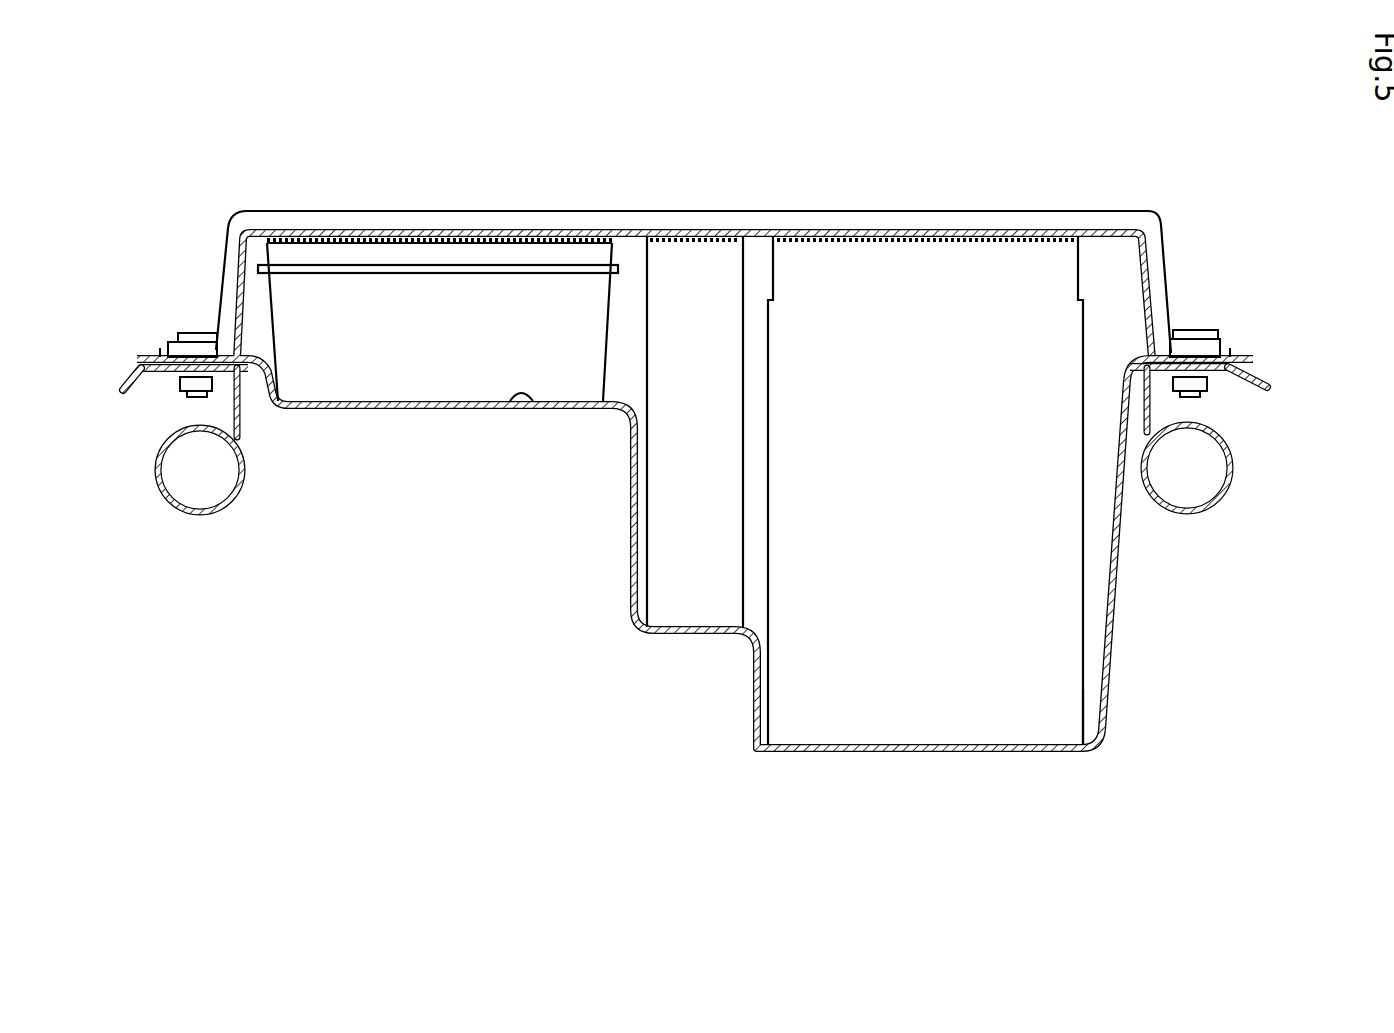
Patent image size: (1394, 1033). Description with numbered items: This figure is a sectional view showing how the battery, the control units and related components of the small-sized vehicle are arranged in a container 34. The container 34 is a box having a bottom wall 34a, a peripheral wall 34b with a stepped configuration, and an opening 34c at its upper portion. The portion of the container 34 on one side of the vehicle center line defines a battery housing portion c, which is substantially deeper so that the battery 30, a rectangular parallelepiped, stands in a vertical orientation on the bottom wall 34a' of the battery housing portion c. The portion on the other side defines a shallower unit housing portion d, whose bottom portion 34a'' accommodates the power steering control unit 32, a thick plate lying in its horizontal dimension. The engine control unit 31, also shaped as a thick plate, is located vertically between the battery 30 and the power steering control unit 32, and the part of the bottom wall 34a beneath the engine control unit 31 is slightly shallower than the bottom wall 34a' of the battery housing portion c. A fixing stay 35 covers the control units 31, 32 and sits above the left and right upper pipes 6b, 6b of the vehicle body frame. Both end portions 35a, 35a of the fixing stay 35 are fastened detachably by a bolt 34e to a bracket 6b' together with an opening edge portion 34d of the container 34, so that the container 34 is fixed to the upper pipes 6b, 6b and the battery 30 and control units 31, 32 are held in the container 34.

The battery 30 is at (933, 247).
The engine control unit 31 is at (715, 262).
The power steering control unit 32 is at (437, 250).
The container 34 is at (615, 611).
The bottom wall 34a is at (780, 782).
The bottom wall of the battery housing portion 34a' is at (939, 788).
The bottom portion of the unit housing portion 34a'' is at (461, 457).
The peripheral wall 34b is at (257, 390).
The opening 34c is at (1107, 383).
The opening edge portion 34d is at (143, 363).
The bolt 34e is at (190, 333).
The fixing stay 35 is at (667, 210).
The end portion of the fixing stay 35a is at (160, 357).
The upper pipe 6b is at (695, 516).
The bracket 6b' is at (702, 423).
The battery housing portion c is at (1087, 702).
The unit housing portion d is at (527, 402).